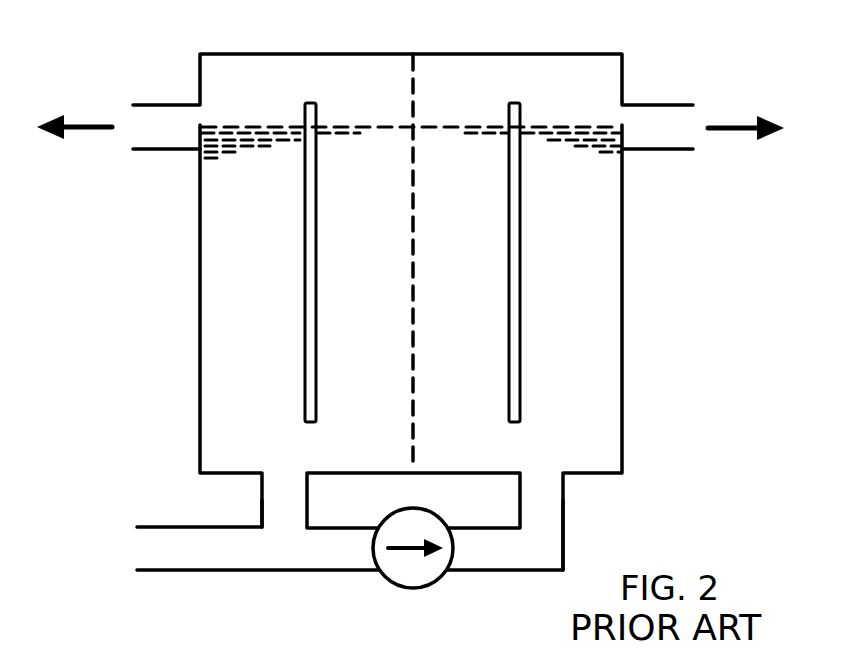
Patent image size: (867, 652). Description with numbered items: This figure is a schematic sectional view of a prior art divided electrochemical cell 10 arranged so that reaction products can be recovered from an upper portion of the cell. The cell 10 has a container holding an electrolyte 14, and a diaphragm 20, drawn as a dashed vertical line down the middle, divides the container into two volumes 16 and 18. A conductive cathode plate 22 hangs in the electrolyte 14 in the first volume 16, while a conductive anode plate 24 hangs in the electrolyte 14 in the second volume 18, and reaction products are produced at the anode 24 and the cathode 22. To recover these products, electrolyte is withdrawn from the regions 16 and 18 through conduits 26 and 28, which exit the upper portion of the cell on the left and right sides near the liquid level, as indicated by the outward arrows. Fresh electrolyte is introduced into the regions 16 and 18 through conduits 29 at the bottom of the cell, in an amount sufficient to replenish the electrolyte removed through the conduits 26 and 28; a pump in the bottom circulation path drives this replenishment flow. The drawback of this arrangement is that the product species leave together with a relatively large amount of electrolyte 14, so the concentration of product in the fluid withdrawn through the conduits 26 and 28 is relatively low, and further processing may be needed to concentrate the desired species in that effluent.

The electrochemical cell 10 is at (128, 42).
The electrolyte 14 is at (228, 365).
The volume 16 is at (233, 72).
The volume 18 is at (592, 70).
The diaphragm 20 is at (413, 312).
The cathode plate 22 is at (310, 100).
The anode plate 24 is at (511, 100).
The conduit 26 is at (160, 140).
The conduit 28 is at (655, 123).
The conduits 29 is at (277, 492).